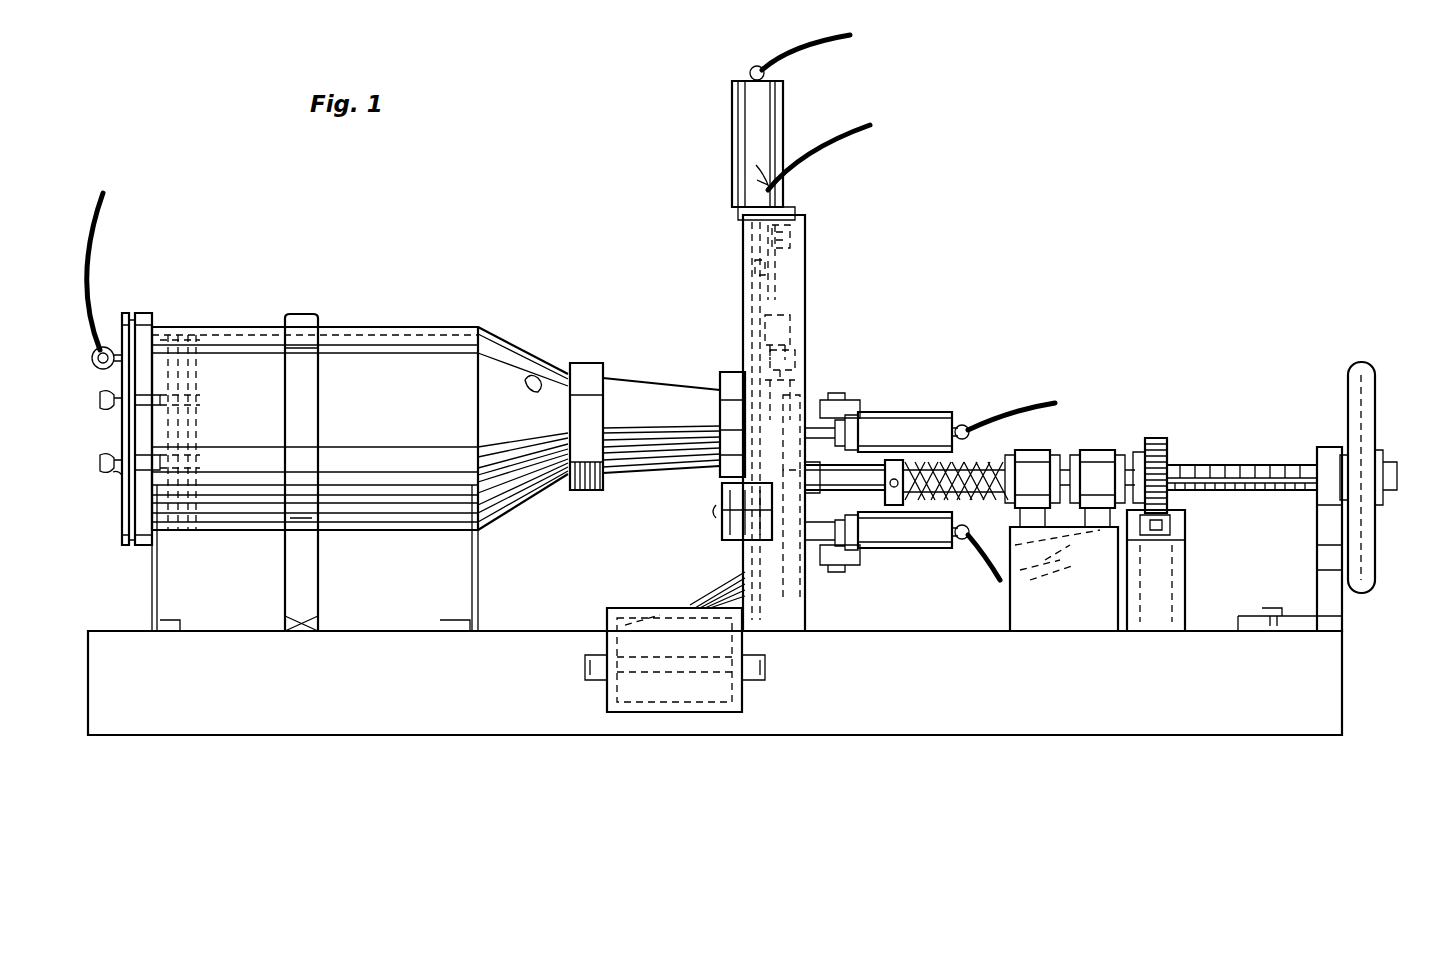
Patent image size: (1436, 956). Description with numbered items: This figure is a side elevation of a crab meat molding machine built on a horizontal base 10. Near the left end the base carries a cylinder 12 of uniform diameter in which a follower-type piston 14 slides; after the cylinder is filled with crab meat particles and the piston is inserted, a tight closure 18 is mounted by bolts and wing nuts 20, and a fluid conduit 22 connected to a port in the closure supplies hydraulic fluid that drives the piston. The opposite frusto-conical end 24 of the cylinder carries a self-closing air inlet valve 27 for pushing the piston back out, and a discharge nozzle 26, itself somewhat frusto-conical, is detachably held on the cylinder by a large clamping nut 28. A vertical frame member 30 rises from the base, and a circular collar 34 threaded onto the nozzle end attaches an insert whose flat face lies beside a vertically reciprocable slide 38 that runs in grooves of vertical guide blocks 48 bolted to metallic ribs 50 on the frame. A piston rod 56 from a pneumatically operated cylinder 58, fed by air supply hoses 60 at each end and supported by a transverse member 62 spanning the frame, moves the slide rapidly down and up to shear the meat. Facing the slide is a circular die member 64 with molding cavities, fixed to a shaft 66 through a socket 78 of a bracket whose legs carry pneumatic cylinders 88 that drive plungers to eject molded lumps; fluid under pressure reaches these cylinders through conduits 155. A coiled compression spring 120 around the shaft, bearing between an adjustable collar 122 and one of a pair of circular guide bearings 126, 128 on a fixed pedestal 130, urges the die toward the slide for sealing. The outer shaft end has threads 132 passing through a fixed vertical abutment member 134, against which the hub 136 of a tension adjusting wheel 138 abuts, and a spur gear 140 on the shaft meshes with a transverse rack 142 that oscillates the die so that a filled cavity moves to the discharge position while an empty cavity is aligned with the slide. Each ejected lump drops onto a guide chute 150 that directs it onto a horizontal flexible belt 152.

The horizontal base 10 is at (850, 738).
The cylinder 12 is at (385, 315).
The follower-type piston 14 is at (205, 380).
The tight closure 18 is at (122, 420).
The bolts and wing nuts 20 is at (110, 475).
The fluid conduit 22 is at (98, 248).
The frusto-conical end 24 is at (492, 335).
The discharge nozzle 26 is at (688, 380).
The air inlet valve 27 is at (522, 385).
The clamping nut 28 is at (585, 492).
The vertical frame member 30 is at (805, 268).
The circular collar 34 is at (720, 478).
The vertically reciprocable slide 38 is at (805, 360).
The vertical guide blocks 48 is at (750, 300).
The metallic ribs 50 is at (798, 320).
The piston rod 56 is at (752, 235).
The pneumatically operated cylinder 58 is at (750, 150).
The air supply hoses 60 is at (850, 38).
The transverse member 62 is at (790, 222).
The die member 64 is at (805, 385).
The shaft 66 is at (1080, 445).
The socket 78 is at (860, 540).
The pneumatic cylinders 88 is at (920, 412).
The coiled compression spring 120 is at (975, 455).
The collar 122 is at (893, 458).
The circular guide bearing 126 is at (1050, 445).
The circular guide bearing 128 is at (1118, 445).
The fixed pedestal 130 is at (1012, 612).
The threads 132 is at (1222, 462).
The fixed vertical abutment member 134 is at (1318, 515).
The hub 136 is at (1376, 450).
The tension adjusting wheel 138 is at (1368, 365).
The spur gear 140 is at (1168, 440).
The transverse rack 142 is at (1175, 502).
The guide chute 150 is at (730, 585).
The horizontal flexible belt 152 is at (645, 600).
The conduits 155 is at (1036, 400).